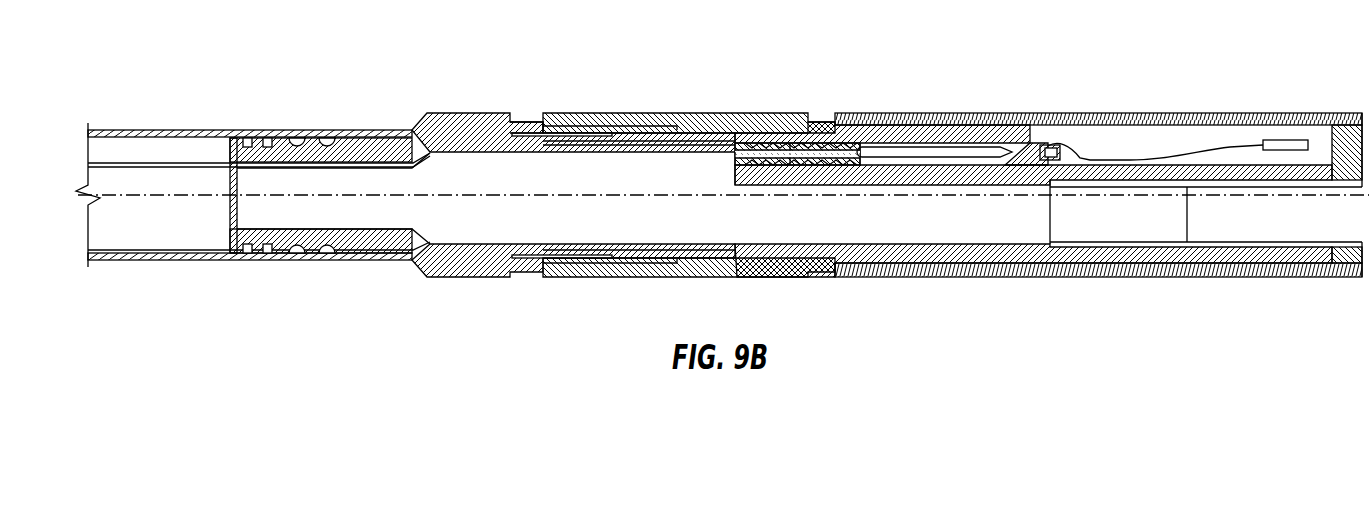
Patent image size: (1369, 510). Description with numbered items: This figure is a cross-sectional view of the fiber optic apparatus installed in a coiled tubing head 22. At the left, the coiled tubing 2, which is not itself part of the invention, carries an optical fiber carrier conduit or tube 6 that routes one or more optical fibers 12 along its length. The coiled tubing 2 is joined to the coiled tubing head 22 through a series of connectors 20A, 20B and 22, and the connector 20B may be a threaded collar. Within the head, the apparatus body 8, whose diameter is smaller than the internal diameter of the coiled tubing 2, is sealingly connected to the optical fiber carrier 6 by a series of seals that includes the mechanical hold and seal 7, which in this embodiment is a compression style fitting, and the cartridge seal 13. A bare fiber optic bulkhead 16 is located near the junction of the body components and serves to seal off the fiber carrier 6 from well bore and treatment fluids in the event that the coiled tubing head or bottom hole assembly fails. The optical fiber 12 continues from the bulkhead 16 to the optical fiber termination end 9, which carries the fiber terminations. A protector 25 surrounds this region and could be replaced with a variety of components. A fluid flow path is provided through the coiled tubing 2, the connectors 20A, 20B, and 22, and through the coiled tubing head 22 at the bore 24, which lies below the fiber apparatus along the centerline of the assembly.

The coiled tubing 2 is at (120, 129).
The optical fiber carrier conduit 6 is at (168, 162).
The connector 20A is at (447, 112).
The connector 20B is at (527, 121).
The coiled tubing head 22 is at (607, 112).
The mechanical hold and seal 7 is at (742, 143).
The cartridge seal 13 is at (792, 140).
The body 8 is at (965, 112).
The bare fiber optic bulkhead 16 is at (1060, 112).
The protector 25 is at (1148, 112).
The optical fiber 12 is at (1233, 112).
The optical fiber termination end 9 is at (1292, 112).
The fluid flow path 24 is at (950, 232).